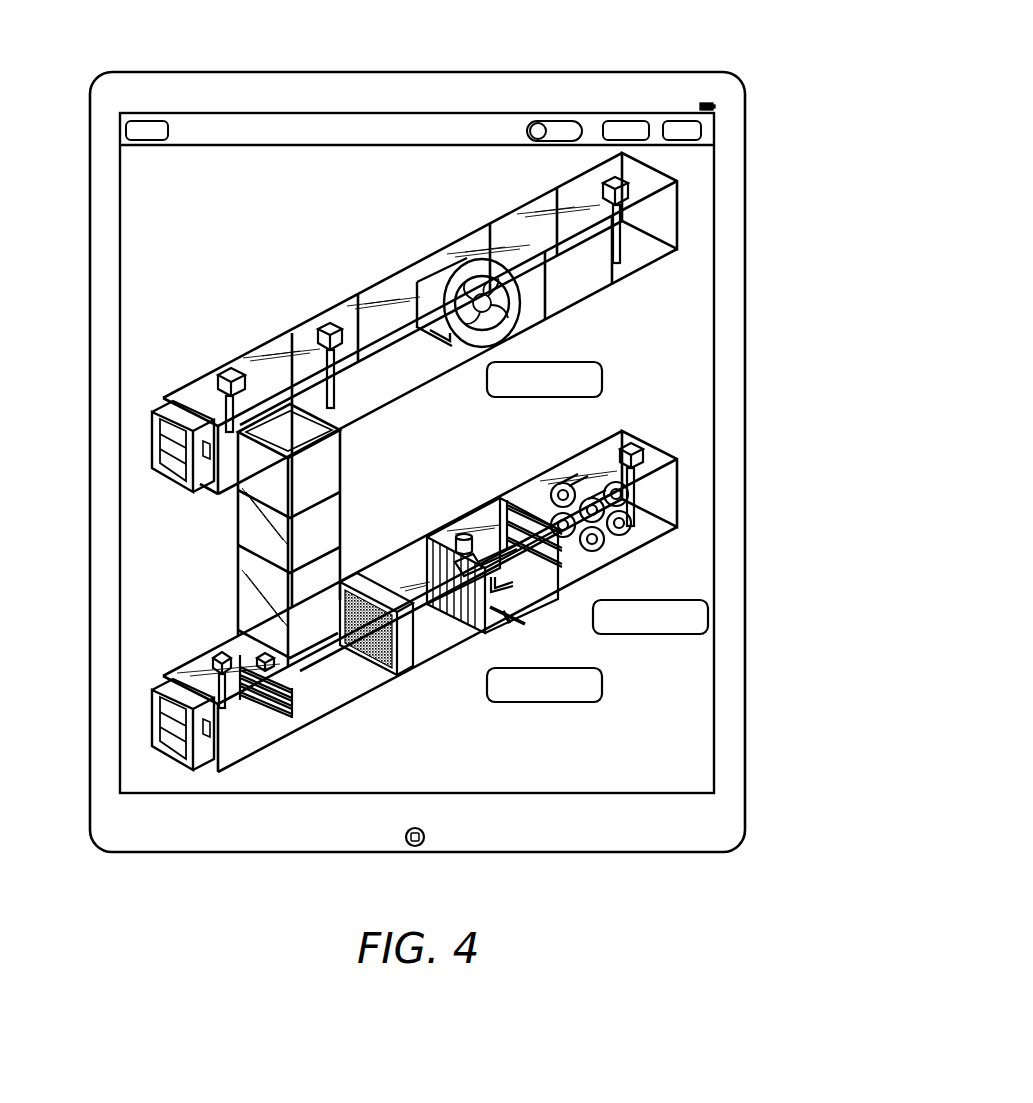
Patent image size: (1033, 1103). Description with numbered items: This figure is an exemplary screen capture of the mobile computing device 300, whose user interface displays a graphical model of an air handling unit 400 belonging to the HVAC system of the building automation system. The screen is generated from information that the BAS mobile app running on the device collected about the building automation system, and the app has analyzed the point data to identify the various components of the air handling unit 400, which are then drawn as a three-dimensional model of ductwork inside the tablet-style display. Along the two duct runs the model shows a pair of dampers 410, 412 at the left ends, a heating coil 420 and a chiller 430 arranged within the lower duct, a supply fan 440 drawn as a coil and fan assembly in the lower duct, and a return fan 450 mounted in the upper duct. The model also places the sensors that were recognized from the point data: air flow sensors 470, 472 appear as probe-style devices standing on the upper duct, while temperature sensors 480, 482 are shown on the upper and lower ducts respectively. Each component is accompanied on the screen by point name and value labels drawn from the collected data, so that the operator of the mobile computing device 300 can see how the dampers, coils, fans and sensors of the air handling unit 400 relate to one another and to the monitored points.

The mobile computing device 300 is at (593, 72).
The air handling unit 400 is at (193, 267).
The damper 410 is at (152, 444).
The damper 412 is at (150, 716).
The heating coil 420 is at (292, 698).
The chiller 430 is at (515, 603).
The supply fan 440 is at (565, 477).
The return fan 450 is at (445, 272).
The air flow sensor 470 is at (343, 333).
The air flow sensor 472 is at (630, 184).
The temperature sensor 480 is at (215, 380).
The temperature sensor 482 is at (212, 661).